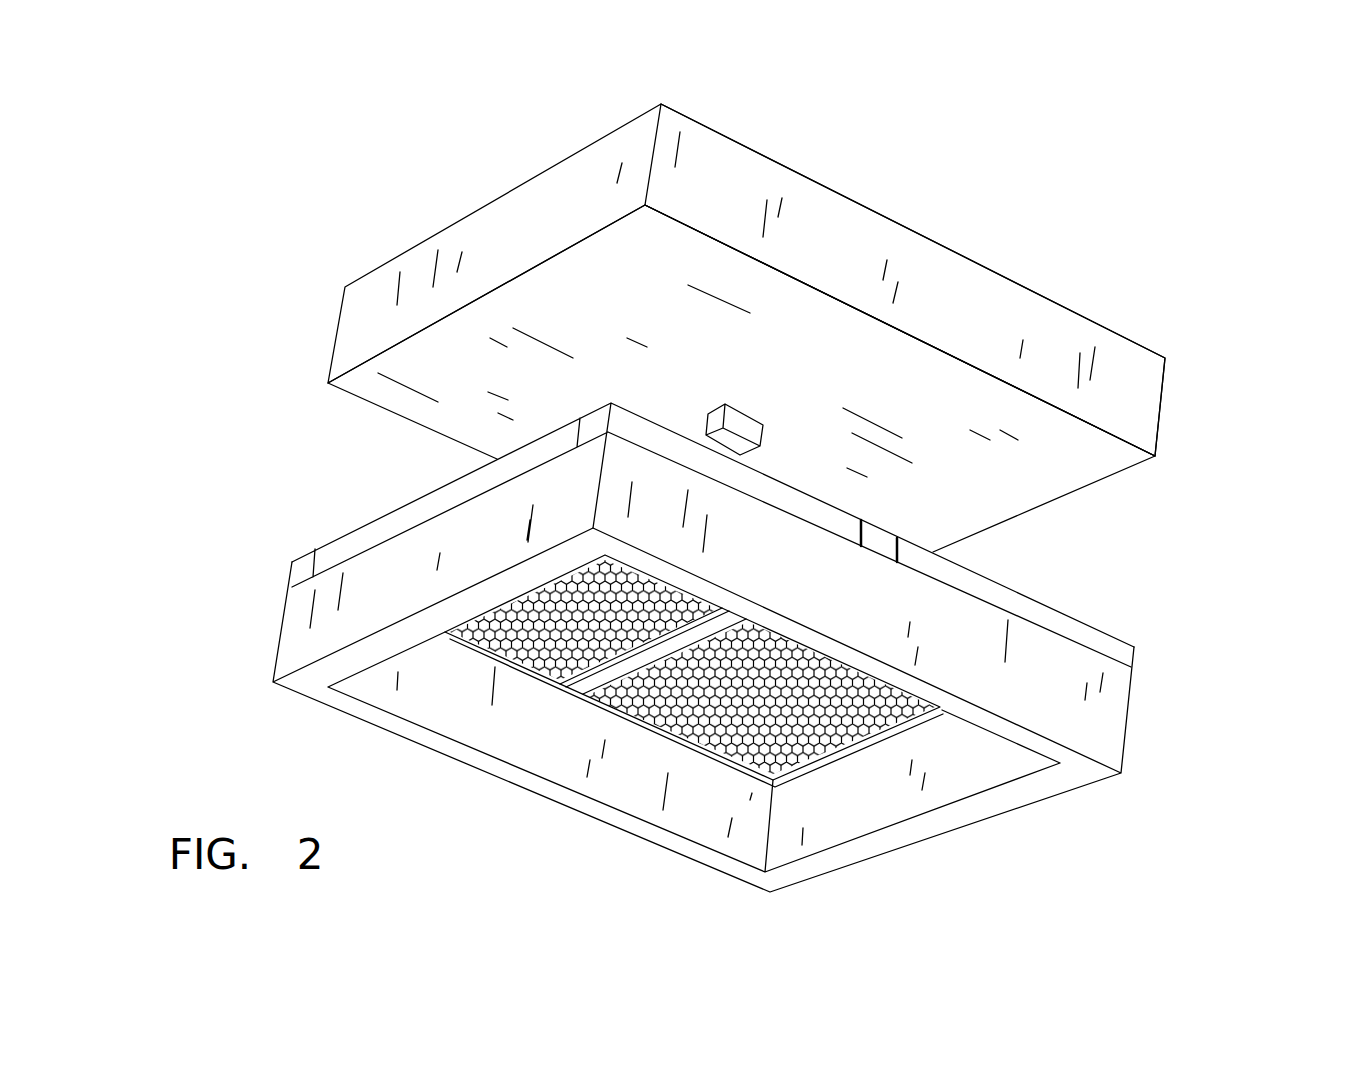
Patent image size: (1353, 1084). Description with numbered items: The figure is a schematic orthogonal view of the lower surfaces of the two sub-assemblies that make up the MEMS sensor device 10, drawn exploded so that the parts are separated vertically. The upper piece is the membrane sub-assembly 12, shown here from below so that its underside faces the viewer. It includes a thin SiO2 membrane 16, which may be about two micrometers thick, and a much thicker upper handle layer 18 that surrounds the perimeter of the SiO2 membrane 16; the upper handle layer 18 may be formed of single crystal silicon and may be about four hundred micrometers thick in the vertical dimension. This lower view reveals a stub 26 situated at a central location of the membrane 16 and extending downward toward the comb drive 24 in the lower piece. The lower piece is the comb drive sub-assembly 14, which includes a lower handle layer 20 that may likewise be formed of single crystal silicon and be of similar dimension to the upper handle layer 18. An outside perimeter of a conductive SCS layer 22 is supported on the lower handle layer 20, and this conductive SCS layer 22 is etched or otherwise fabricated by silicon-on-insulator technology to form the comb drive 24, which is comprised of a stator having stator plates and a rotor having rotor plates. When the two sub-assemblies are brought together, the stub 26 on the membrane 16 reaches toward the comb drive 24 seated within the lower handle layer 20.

The MEMS sensor device 10 is at (216, 587).
The membrane sub-assembly 12 is at (292, 341).
The comb drive sub-assembly 14 is at (259, 689).
The SiO2 membrane 16 is at (636, 297).
The upper handle layer 18 is at (1135, 397).
The lower handle layer 20 is at (1087, 712).
The conductive SCS layer 22 is at (1092, 643).
The comb drive 24 is at (720, 722).
The stub 26 is at (745, 410).